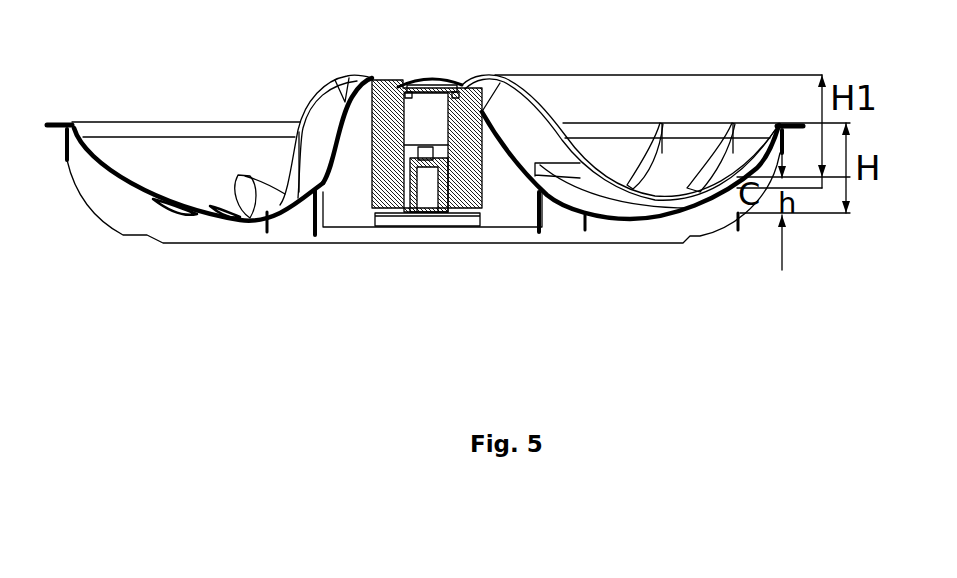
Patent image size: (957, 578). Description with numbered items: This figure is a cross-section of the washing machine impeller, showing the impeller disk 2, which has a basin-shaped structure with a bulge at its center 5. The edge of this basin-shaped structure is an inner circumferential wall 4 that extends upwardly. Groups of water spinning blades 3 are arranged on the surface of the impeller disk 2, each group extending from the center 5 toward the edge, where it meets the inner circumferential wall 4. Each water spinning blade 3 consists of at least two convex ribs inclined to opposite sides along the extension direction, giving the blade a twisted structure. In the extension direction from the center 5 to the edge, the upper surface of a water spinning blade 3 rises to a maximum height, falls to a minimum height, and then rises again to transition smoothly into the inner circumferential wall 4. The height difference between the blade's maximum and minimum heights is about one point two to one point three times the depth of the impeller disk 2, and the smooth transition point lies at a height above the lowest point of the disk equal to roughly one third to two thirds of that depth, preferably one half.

The impeller disk 2 is at (608, 220).
The water spinning blades 3 is at (513, 112).
The inner circumferential wall 4 is at (733, 130).
The center 5 is at (420, 78).